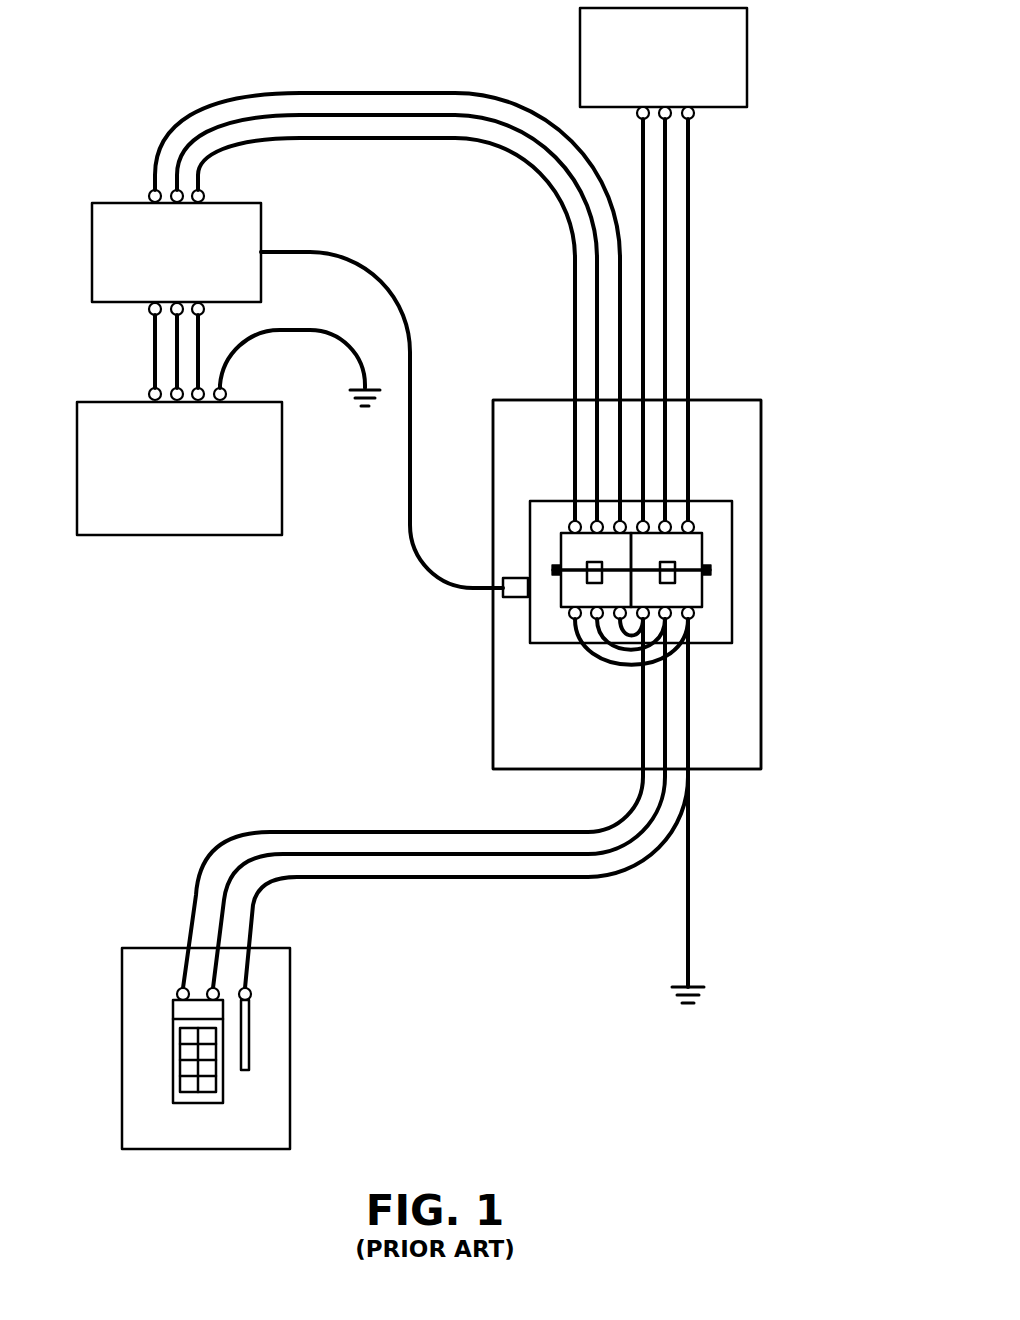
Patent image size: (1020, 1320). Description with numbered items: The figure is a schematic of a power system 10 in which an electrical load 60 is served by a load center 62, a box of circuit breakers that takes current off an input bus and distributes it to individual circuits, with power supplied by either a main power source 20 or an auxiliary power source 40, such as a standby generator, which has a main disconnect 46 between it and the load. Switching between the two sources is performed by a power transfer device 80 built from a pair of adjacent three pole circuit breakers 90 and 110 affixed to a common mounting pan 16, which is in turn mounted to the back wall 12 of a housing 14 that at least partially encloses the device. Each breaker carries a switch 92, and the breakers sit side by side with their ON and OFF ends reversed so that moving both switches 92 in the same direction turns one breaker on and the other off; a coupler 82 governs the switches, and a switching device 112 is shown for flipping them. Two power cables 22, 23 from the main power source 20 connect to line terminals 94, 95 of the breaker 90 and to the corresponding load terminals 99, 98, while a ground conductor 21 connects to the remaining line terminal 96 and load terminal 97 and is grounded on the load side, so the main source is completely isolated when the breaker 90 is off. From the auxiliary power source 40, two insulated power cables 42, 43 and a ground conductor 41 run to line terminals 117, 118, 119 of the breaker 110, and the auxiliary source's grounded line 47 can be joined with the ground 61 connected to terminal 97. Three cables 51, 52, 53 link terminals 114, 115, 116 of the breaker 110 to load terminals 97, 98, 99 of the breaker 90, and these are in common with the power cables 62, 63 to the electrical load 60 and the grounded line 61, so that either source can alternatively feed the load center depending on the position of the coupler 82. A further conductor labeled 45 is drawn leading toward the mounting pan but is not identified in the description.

The power system 10 is at (462, 1045).
The back wall 12 is at (505, 433).
The housing 14 is at (762, 732).
The common mounting pan 16 is at (718, 545).
The main power source 20 is at (649, 68).
The ground conductor 21 is at (690, 240).
The power cable 22 is at (667, 263).
The power cable 23 is at (645, 290).
The auxiliary power source 40 is at (164, 478).
The ground conductor 41 is at (572, 240).
The insulated power cable 42 is at (597, 263).
The insulated power cable 43 is at (620, 285).
The control conductor 45 is at (516, 578).
The main disconnect 46 is at (162, 265).
The grounded line 47 is at (350, 351).
The cable 51 is at (597, 662).
The cable 52 is at (620, 652).
The cable 53 is at (630, 637).
The electrical load 60 is at (185, 1070).
The ground 61 is at (690, 905).
The load center 62 is at (134, 981).
The power cable 63 is at (192, 922).
The power transfer device 80 is at (762, 835).
The coupler 82 is at (553, 566).
The circuit breaker 90 is at (667, 560).
The switch 92 is at (587, 583).
The line terminal 94 is at (646, 521).
The line terminal 95 is at (668, 521).
The line terminal 96 is at (690, 521).
The load terminal 97 is at (690, 619).
The load terminal 98 is at (668, 619).
The load terminal 99 is at (646, 619).
The circuit breaker 110 is at (566, 560).
The switching device 112 is at (712, 573).
The load terminal 114 is at (572, 619).
The load terminal 115 is at (595, 619).
The load terminal 116 is at (618, 619).
The line terminal 117 is at (572, 521).
The line terminal 118 is at (595, 521).
The line terminal 119 is at (618, 521).